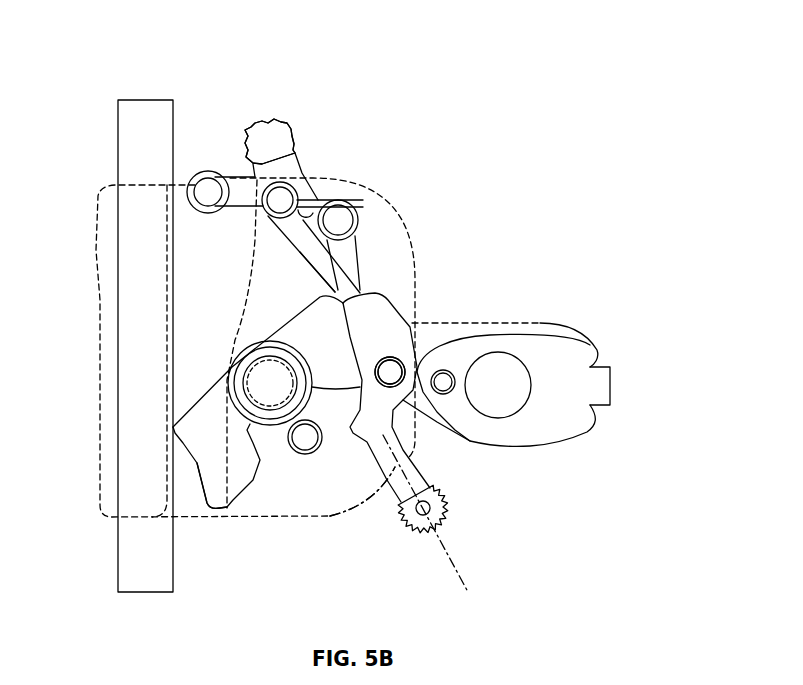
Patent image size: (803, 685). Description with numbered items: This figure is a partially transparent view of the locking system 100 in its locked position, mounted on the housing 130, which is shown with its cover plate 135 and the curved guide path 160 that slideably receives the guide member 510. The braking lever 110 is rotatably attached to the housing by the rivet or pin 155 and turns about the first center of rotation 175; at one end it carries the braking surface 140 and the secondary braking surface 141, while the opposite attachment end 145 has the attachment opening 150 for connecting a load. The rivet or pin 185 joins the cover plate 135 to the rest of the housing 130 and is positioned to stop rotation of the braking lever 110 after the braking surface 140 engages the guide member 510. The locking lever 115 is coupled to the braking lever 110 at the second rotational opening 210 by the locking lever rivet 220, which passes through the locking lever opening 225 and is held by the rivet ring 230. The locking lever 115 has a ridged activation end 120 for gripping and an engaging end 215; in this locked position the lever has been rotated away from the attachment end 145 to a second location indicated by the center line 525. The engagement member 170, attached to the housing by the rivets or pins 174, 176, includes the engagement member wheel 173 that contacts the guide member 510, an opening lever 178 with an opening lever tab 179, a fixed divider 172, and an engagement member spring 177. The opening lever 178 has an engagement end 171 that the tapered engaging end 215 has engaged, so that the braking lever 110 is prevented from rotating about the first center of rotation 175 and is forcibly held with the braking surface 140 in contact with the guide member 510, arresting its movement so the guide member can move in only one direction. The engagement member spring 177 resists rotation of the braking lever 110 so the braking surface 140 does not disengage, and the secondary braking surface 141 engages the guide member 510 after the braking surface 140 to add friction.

The locking system 100 is at (187, 49).
The guide member 510 is at (140, 128).
The guide path 160 is at (105, 183).
The locking lever rivet 220 is at (385, 318).
The engagement member wheel 173 is at (215, 172).
The engagement member 170 is at (306, 166).
The divider 172 is at (278, 121).
The opening lever tab 179 is at (301, 112).
The rivet or pin 174 is at (281, 198).
The engagement member spring 177 is at (327, 197).
The opening lever 178 is at (294, 241).
The engagement end 171 is at (330, 290).
The rivet or pin 176 is at (341, 220).
The engaging end 215 is at (365, 297).
The braking surface 140 is at (190, 457).
The secondary braking surface 141 is at (207, 509).
The rivet or pin 155 is at (273, 392).
The first center of rotation 175 is at (278, 463).
The locking lever 115 is at (427, 472).
The activation end 120 is at (450, 512).
The center line 525 is at (468, 575).
The housing 130 is at (336, 529).
The cover plate 135 is at (367, 531).
The second rotational opening 210 is at (392, 370).
The locking lever opening 225 is at (420, 324).
The rivet ring 230 is at (441, 323).
The braking lever 110 is at (540, 324).
The attachment opening 150 is at (512, 370).
The rivet or pin 185 is at (444, 382).
The attachment end 145 is at (611, 386).